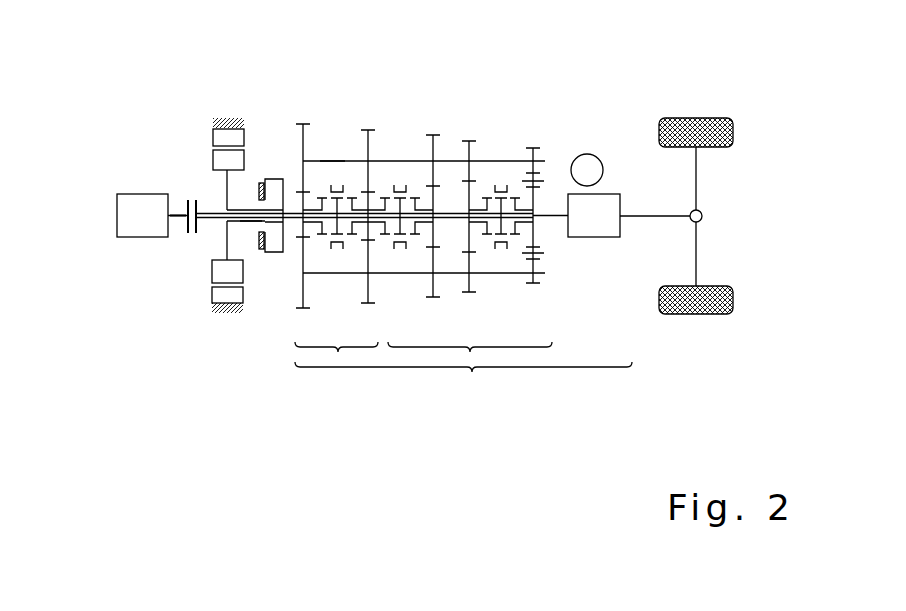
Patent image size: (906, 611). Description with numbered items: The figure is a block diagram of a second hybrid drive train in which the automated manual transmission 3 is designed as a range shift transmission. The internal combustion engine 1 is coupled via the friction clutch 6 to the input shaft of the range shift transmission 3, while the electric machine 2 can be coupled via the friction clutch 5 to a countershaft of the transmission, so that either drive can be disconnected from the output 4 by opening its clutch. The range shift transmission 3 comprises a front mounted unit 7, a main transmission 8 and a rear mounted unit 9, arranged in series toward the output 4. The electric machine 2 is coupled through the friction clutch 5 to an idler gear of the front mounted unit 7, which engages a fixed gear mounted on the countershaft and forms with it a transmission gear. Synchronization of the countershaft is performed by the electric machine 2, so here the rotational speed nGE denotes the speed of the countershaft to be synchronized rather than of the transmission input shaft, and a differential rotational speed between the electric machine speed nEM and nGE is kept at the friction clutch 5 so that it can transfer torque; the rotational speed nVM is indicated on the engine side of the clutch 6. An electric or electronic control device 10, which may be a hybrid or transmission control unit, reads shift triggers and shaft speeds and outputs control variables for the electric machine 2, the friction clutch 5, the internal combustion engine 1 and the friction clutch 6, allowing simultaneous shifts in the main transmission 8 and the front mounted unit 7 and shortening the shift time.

The internal combustion engine 1 is at (132, 203).
The electric machine 2 is at (209, 116).
The automated manual transmission 3 is at (460, 246).
The output 4 is at (693, 122).
The friction clutch 5 is at (259, 173).
The friction clutch 6 is at (189, 241).
The front mounted unit 7 is at (338, 352).
The main transmission 8 is at (470, 352).
The rear mounted unit 9 is at (595, 222).
The control device 10 is at (583, 157).
The combustion engine speed nVM is at (180, 210).
The rotational speed of the electric machine nEM is at (243, 223).
The rotational speed of the countershaft nGE is at (332, 160).